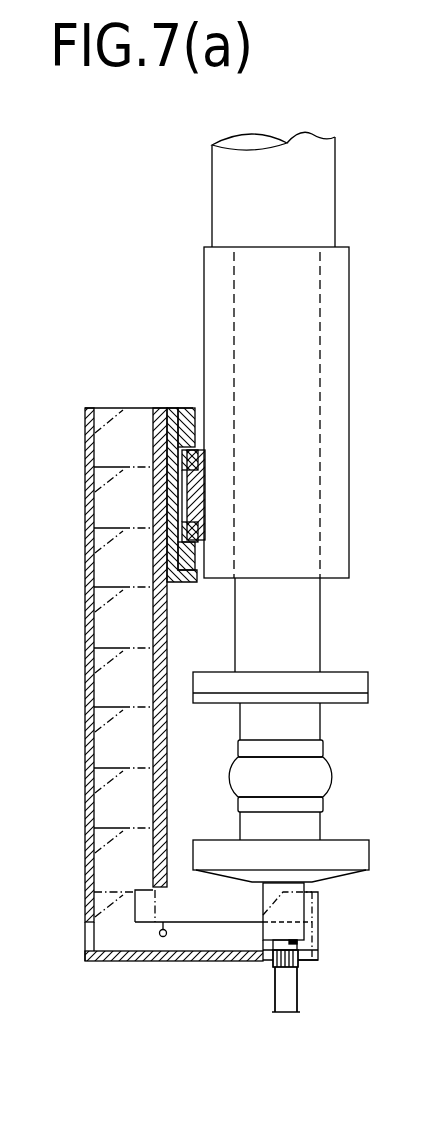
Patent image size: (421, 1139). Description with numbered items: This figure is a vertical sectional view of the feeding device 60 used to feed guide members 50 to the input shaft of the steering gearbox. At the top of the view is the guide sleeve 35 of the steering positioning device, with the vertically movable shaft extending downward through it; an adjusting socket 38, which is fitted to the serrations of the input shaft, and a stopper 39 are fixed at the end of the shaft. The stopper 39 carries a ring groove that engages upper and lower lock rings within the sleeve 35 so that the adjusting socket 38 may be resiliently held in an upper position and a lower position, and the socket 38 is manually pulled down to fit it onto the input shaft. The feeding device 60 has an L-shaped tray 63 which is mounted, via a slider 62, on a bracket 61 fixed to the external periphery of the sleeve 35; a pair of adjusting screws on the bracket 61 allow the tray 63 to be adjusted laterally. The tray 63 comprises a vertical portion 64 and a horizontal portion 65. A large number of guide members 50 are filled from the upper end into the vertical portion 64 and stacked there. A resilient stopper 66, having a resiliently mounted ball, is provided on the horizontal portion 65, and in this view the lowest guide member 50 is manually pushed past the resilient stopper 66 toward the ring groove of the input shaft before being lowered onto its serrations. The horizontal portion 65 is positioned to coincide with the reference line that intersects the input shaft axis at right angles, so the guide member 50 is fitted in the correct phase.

The guide sleeve 35 is at (339, 468).
The adjusting socket 38 is at (293, 905).
The stopper 39 is at (313, 635).
The guide member 50 is at (88, 492).
The feeding device 60 is at (86, 393).
The bracket 61 is at (200, 493).
The slider 62 is at (168, 585).
The L-shaped tray 63 is at (78, 677).
The vertical portion 64 is at (85, 580).
The horizontal portion 65 is at (182, 963).
The resilient stopper 66 is at (163, 937).